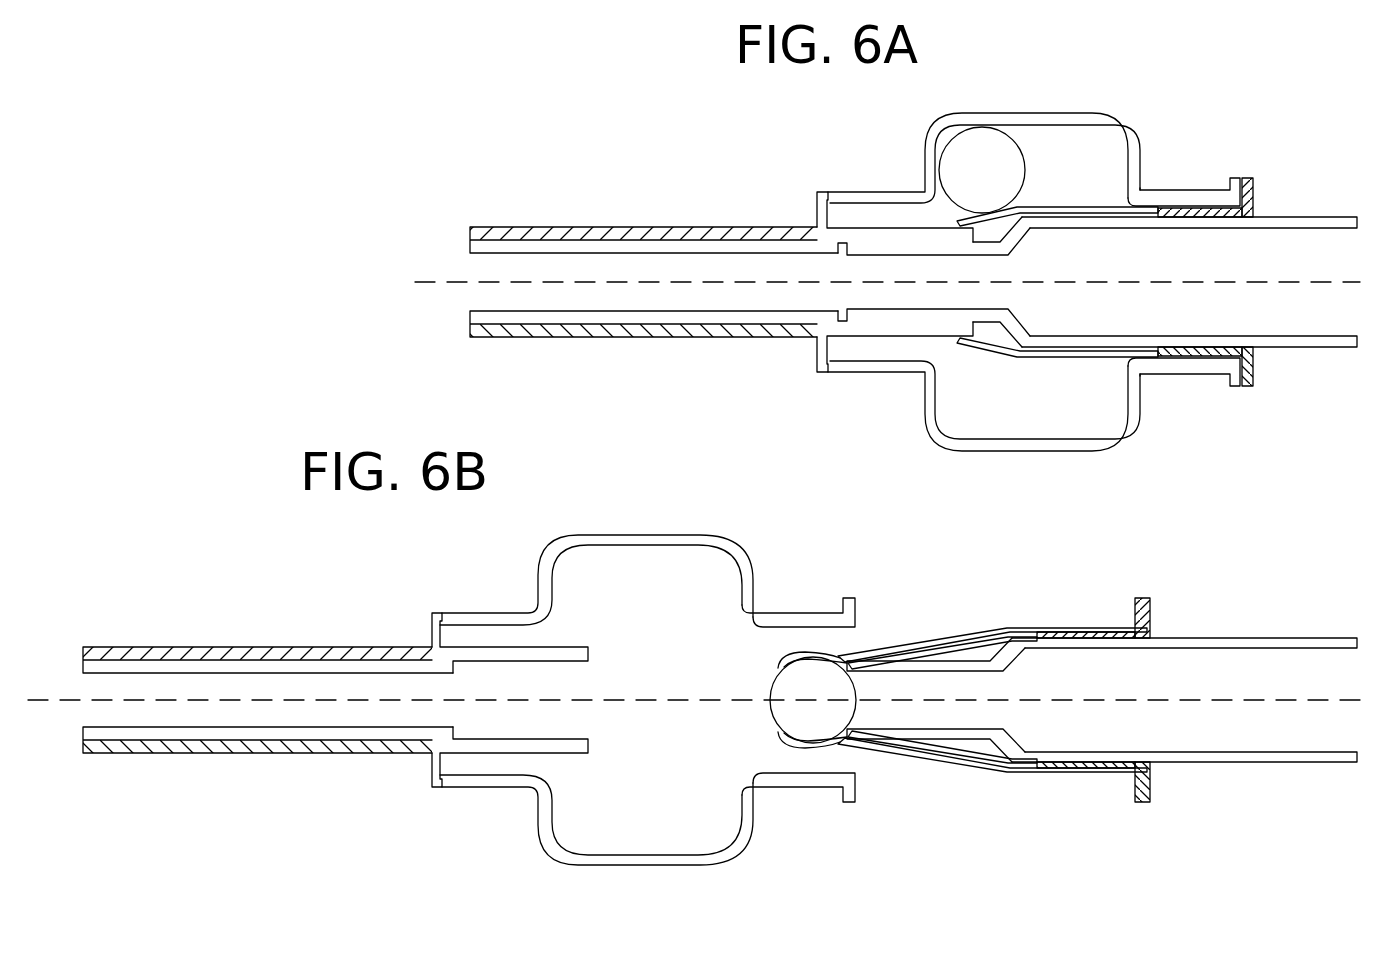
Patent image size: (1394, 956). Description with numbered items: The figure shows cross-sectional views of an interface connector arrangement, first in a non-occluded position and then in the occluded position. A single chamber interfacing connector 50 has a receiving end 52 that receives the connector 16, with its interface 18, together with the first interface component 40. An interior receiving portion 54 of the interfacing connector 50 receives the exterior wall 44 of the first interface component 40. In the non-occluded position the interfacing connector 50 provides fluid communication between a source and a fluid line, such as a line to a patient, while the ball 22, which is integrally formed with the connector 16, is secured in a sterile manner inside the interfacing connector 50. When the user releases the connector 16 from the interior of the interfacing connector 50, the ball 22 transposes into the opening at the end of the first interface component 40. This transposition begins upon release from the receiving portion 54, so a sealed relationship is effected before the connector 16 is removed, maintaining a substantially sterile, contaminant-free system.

In FIG. 6A, the connector 16 is at (1255, 185).
In FIG. 6B, the connector 16 is at (1095, 630).
In FIG. 6B, the interface 18 is at (958, 636).
In FIG. 6A, the ball 22 is at (952, 172).
In FIG. 6B, the ball 22 is at (790, 688).
In FIG. 6A, the first interface component 40 is at (1075, 215).
In FIG. 6B, the first interface component 40 is at (968, 750).
In FIG. 6A, the exterior wall 44 is at (873, 315).
In FIG. 6B, the exterior wall 44 is at (927, 738).
In FIG. 6A, the interfacing connector 50 is at (866, 192).
In FIG. 6B, the interfacing connector 50 is at (575, 542).
In FIG. 6A, the receiving end 52 is at (1200, 198).
In FIG. 6B, the receiving end 52 is at (805, 617).
In FIG. 6A, the interior receiving portion 54 is at (857, 232).
In FIG. 6B, the interior receiving portion 54 is at (487, 652).